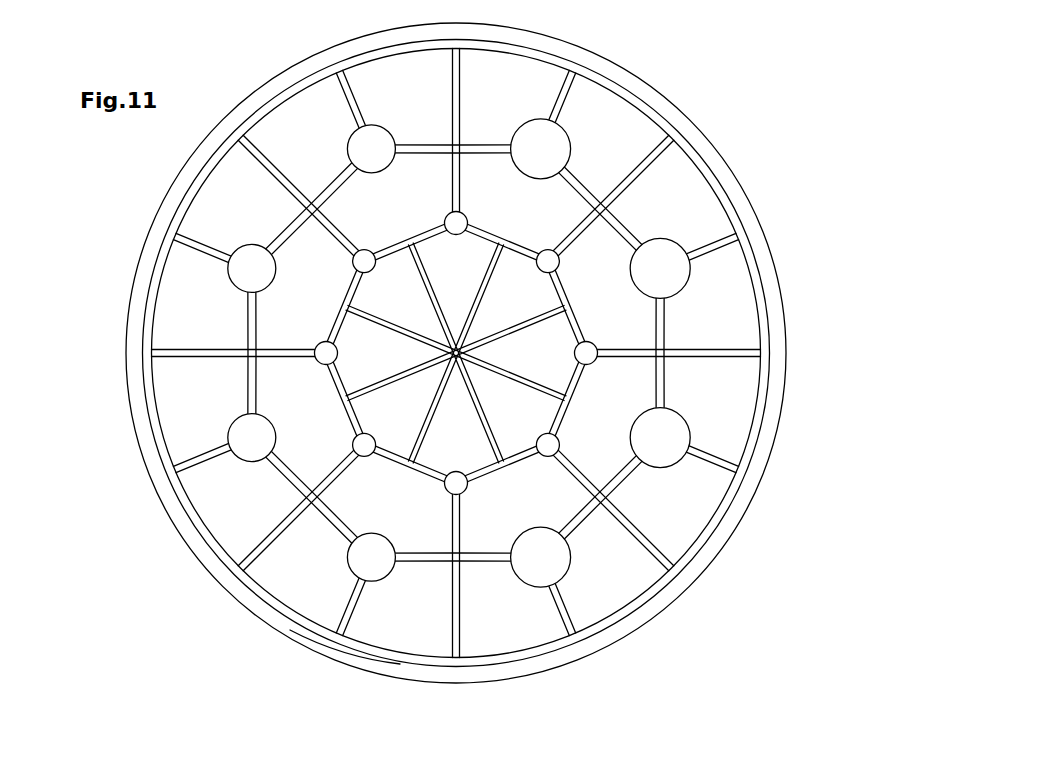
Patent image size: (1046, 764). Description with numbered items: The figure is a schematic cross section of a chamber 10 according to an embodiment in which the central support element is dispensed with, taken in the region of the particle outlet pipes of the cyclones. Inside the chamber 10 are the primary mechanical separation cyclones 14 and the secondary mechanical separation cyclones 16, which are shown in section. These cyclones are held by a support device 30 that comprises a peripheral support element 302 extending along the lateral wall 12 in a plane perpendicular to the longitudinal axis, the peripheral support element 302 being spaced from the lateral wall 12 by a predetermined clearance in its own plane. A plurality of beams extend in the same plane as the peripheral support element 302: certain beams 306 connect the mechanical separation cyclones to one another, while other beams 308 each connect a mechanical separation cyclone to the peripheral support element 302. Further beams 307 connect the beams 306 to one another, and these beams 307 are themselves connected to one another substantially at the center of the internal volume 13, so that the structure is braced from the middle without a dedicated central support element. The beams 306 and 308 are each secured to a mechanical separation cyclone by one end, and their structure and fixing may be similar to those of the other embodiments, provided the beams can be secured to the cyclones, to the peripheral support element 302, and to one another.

The chamber 10 is at (788, 301).
The lateral wall 12 is at (702, 578).
The internal volume 13 is at (372, 620).
The primary mechanical separation cyclones 14 is at (578, 118).
The secondary mechanical separation cyclones 16 is at (443, 220).
The support device 30 is at (303, 79).
The peripheral support element 302 is at (178, 196).
The beams 306 is at (497, 143).
The beams 307 is at (420, 282).
The beams 308 is at (548, 88).